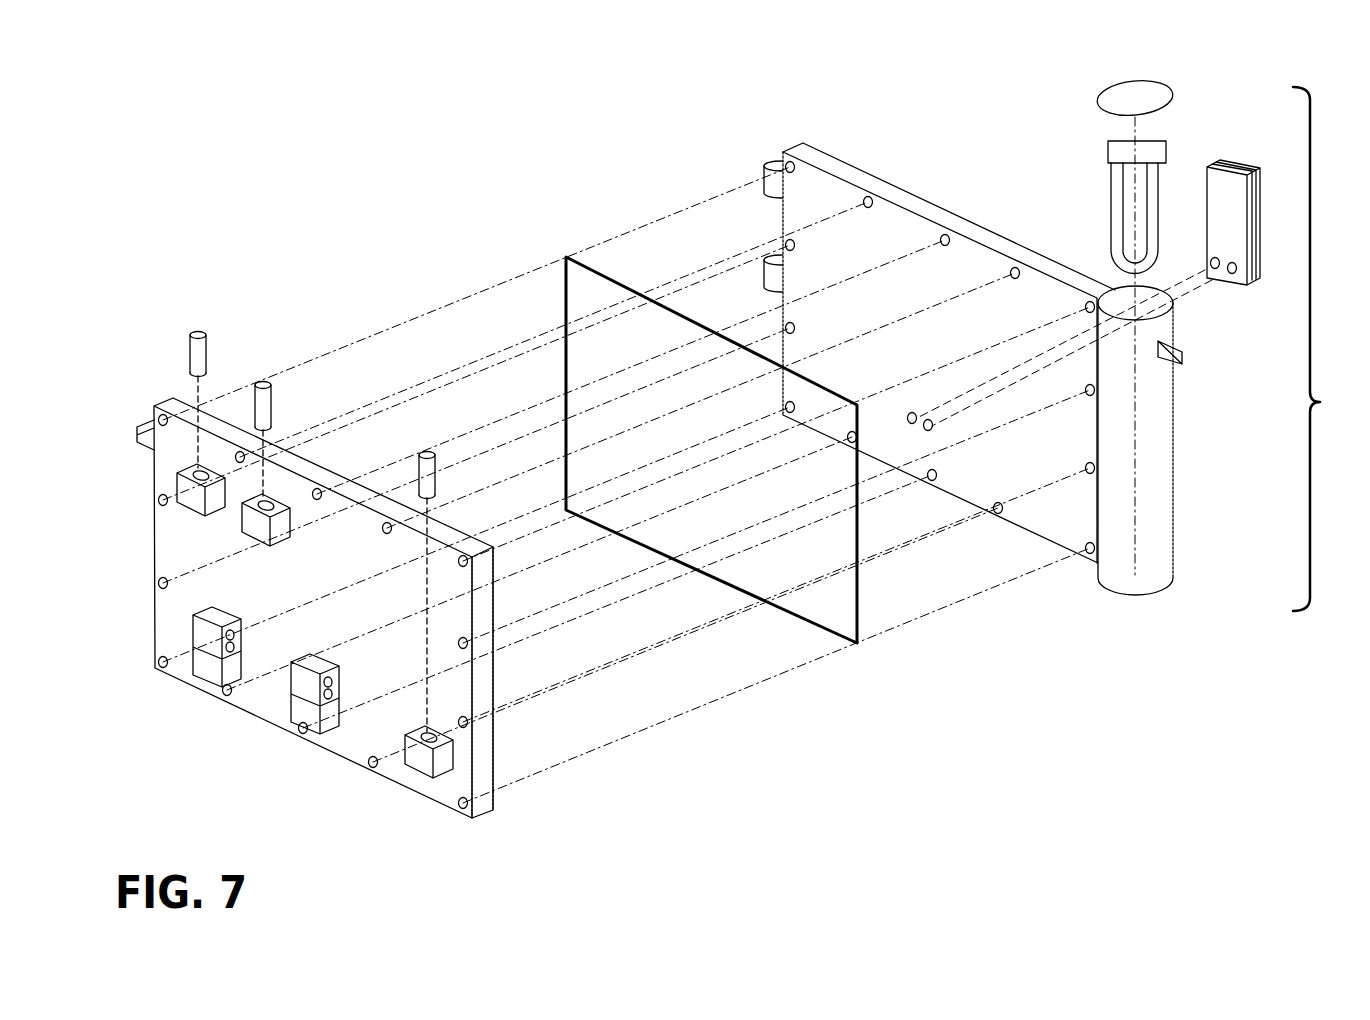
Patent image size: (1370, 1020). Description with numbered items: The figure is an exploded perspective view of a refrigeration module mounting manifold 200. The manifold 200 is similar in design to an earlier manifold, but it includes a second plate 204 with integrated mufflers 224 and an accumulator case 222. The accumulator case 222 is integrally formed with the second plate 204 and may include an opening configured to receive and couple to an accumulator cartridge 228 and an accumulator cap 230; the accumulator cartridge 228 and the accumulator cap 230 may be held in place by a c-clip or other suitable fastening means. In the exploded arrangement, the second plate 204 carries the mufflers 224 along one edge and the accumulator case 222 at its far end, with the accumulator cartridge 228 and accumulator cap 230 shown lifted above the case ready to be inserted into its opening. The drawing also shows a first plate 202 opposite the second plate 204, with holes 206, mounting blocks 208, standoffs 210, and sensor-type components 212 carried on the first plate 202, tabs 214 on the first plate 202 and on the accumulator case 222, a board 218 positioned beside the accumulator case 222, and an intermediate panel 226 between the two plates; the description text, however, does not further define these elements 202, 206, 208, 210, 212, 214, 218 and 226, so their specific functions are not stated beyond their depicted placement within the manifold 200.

The manifold 200 is at (1330, 349).
The first plate 202 is at (430, 802).
The second plate 204 is at (1010, 523).
The holes 206 is at (368, 768).
The mounting blocks 208 is at (255, 528).
The standoffs 210 is at (427, 453).
The sensor modules 212 is at (300, 707).
The tabs 214 is at (135, 430).
The circuit board 218 is at (1240, 162).
The accumulator case 222 is at (1152, 568).
The mufflers 224 is at (765, 263).
The panel 226 is at (563, 258).
The accumulator cartridge 228 is at (1112, 178).
The accumulator cap 230 is at (1143, 78).